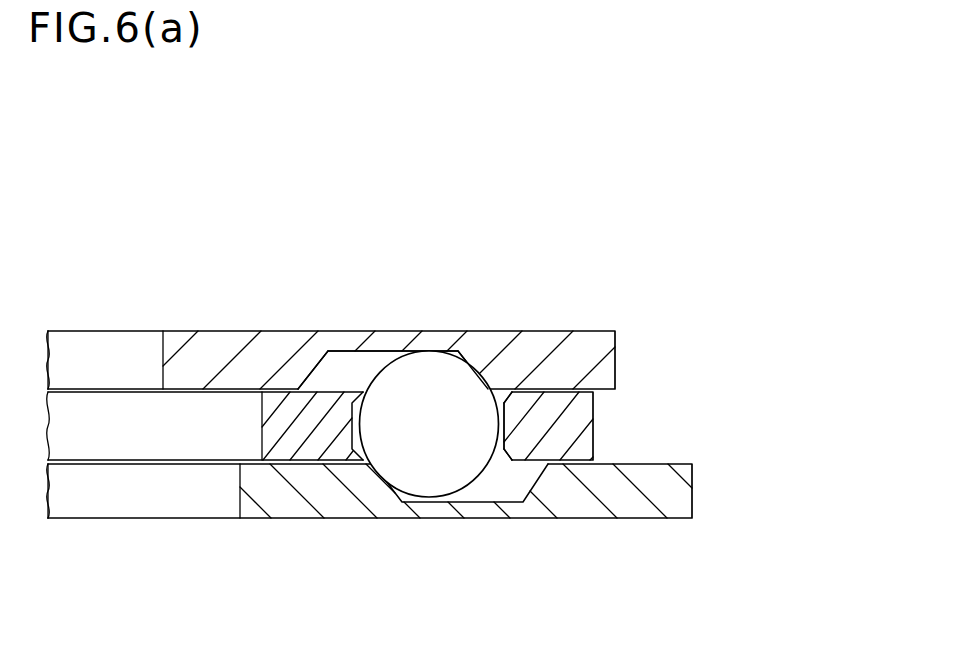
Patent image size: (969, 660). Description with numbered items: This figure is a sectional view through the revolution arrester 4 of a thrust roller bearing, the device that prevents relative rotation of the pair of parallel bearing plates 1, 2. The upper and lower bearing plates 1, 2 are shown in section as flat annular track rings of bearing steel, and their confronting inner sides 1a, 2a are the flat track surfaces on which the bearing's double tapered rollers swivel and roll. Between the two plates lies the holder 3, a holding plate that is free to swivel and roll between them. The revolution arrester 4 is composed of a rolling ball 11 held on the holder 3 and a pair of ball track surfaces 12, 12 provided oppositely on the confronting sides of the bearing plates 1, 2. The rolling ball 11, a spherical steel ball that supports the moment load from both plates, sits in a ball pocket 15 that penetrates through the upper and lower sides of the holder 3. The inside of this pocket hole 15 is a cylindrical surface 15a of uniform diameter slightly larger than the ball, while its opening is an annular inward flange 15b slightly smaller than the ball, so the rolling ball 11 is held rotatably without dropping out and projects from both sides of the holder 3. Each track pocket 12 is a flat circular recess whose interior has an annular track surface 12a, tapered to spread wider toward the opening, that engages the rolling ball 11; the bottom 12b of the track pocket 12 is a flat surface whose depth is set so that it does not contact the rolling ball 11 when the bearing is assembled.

The bearing plate 1 is at (388, 321).
The inner side 1a is at (230, 398).
The bearing plate 2 is at (430, 497).
The inner side 2a is at (252, 455).
The holder 3 is at (396, 426).
The revolution arrester 4 is at (169, 137).
The rolling ball 11 is at (442, 366).
The ball track surface 12 is at (423, 419).
The annular track surface 12a is at (309, 362).
The bottom 12b is at (388, 352).
The ball pocket 15 is at (409, 509).
The cylindrical surface 15a is at (440, 497).
The annular inward flange 15b is at (488, 367).